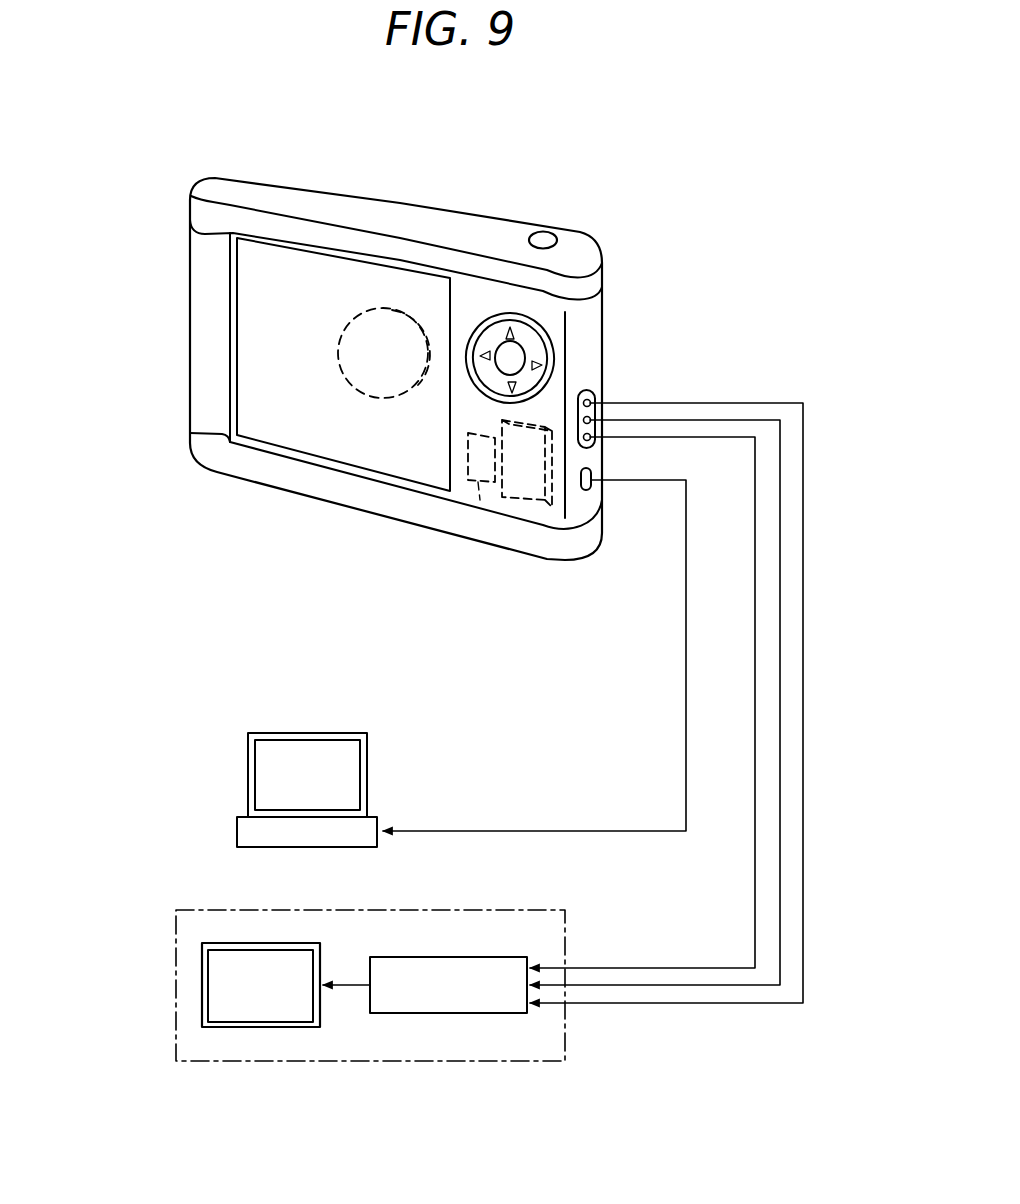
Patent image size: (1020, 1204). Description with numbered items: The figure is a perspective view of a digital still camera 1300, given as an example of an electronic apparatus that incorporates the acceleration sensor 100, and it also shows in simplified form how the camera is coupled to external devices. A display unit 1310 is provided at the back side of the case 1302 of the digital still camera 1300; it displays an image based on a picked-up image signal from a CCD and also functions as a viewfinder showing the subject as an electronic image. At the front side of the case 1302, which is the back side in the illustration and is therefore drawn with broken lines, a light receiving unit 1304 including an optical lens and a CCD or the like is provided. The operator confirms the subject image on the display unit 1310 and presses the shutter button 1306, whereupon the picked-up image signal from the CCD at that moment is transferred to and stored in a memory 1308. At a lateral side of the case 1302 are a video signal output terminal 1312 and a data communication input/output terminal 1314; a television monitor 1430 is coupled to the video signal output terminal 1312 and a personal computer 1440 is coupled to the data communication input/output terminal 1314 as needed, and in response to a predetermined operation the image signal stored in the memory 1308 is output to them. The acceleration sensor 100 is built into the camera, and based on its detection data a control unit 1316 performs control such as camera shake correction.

The digital still camera 1300 is at (512, 134).
The case 1302 is at (207, 216).
The light receiving unit 1304 is at (383, 308).
The shutter button 1306 is at (545, 233).
The memory 1308 is at (527, 488).
The display unit 1310 is at (315, 433).
The video signal output terminal 1312 is at (588, 400).
The data communication input/output terminal 1314 is at (593, 487).
The control unit 1316 is at (480, 500).
The acceleration sensor 100 is at (460, 478).
The personal computer 1440 is at (248, 773).
The television monitor 1430 is at (176, 988).